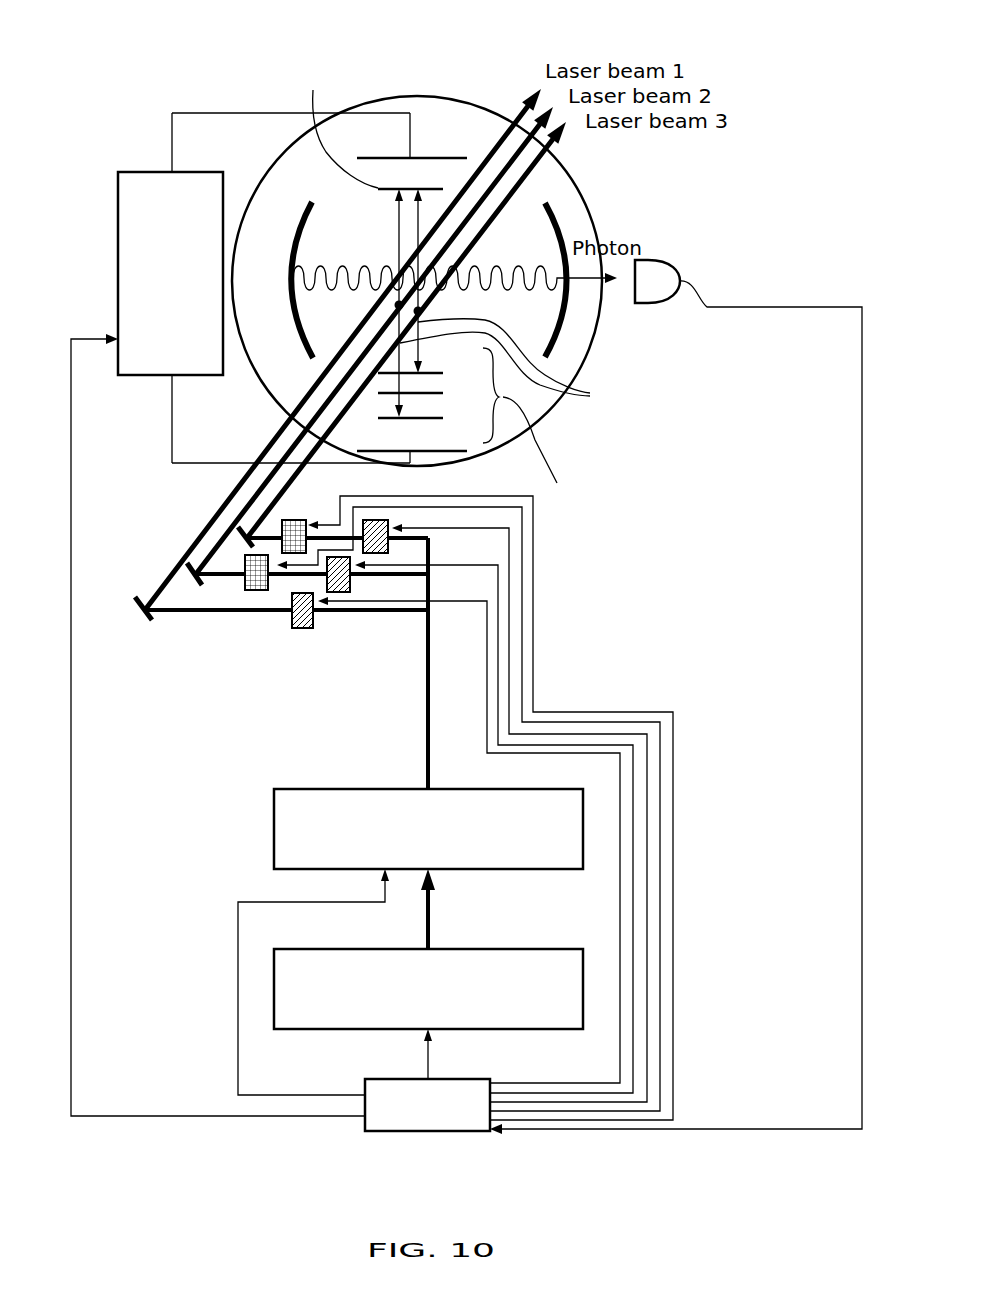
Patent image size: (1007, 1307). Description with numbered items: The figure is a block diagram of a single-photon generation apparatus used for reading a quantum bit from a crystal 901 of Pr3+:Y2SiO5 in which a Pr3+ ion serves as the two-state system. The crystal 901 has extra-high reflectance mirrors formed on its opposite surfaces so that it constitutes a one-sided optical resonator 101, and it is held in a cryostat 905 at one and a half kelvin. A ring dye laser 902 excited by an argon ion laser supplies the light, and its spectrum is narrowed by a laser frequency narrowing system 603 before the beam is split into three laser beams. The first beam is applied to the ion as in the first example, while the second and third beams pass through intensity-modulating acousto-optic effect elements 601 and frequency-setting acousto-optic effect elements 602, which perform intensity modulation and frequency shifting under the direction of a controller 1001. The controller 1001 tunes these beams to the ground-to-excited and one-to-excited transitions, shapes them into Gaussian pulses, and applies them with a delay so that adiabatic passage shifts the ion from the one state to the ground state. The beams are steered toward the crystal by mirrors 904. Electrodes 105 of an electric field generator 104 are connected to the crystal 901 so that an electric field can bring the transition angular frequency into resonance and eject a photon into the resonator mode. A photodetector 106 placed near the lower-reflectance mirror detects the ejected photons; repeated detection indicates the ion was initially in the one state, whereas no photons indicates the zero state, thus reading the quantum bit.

The optical resonator 101 is at (342, 222).
The electric field generator 104 is at (118, 213).
The electrodes 105 is at (427, 158).
The photodetector 106 is at (672, 260).
The intensity-modulating acousto-optic effect elements 601 is at (297, 557).
The frequency-setting acousto-optic effect elements 602 is at (380, 555).
The laser frequency narrowing system 603 is at (519, 870).
The crystal 901 is at (507, 233).
The ring dye laser 902 is at (519, 1030).
The mirror 904 is at (137, 598).
The cryostat 905 is at (500, 397).
The controller 1001 is at (427, 1131).